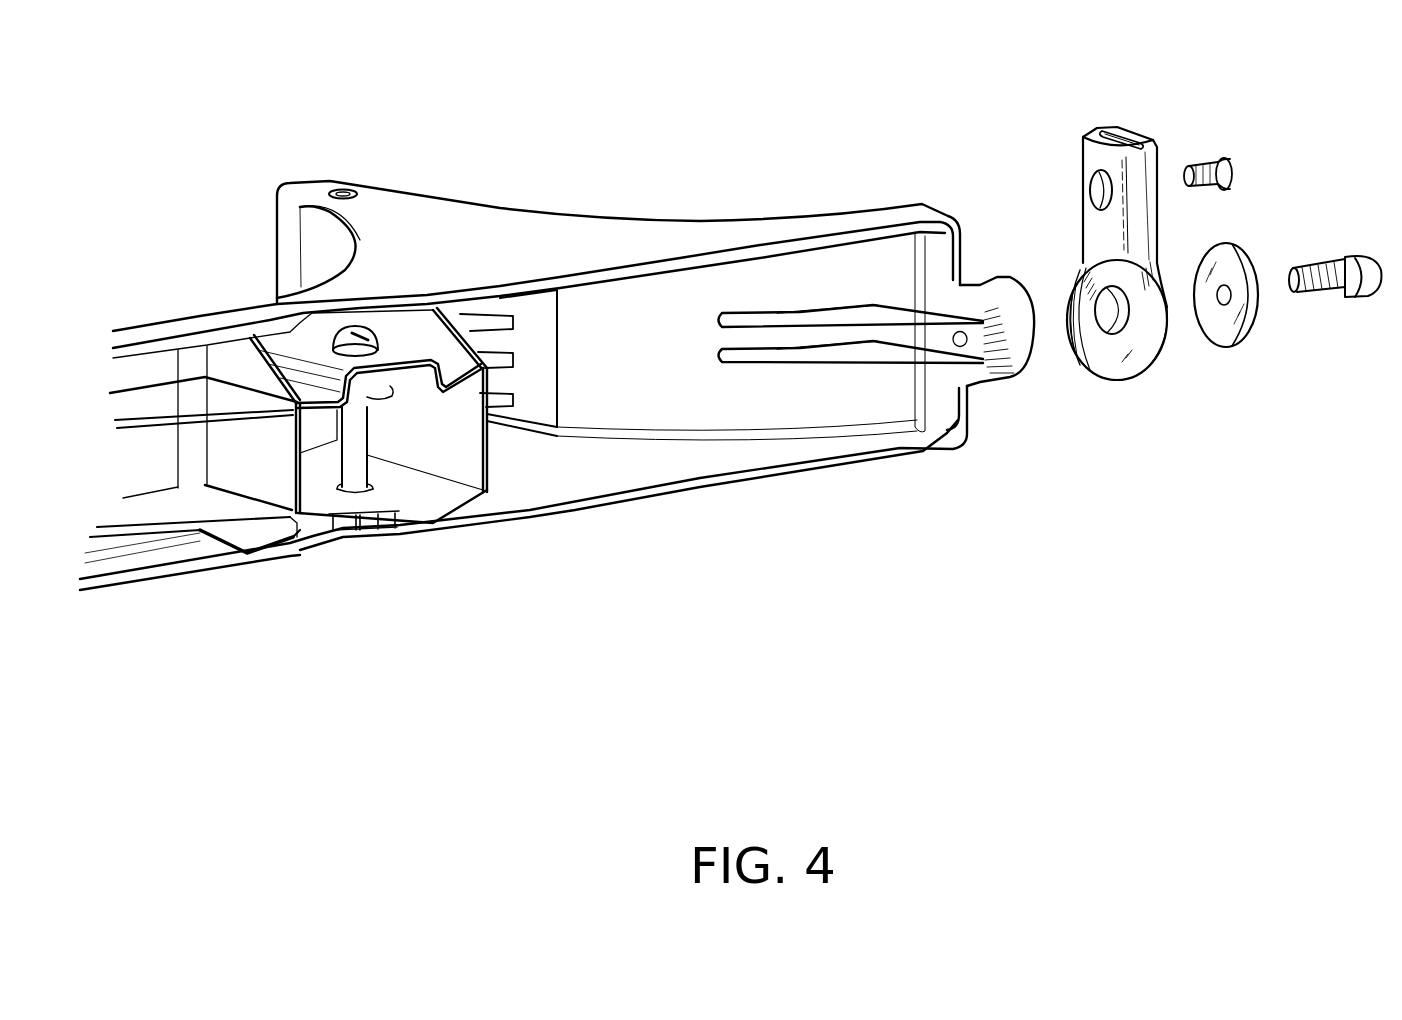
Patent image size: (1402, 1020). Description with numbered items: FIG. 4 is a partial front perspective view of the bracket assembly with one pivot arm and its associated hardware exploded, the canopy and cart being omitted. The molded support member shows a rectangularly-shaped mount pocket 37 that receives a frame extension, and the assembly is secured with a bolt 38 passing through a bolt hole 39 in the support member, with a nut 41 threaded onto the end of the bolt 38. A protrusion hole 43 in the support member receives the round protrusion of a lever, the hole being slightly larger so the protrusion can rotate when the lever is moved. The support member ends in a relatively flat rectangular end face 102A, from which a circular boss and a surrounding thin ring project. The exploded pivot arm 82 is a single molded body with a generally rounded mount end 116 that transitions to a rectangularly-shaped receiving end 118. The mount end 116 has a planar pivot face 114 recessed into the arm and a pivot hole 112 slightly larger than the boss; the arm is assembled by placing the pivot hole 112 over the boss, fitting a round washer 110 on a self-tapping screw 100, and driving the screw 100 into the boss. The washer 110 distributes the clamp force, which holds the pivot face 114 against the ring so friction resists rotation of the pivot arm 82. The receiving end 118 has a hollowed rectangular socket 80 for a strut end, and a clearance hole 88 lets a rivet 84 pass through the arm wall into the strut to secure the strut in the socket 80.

The mount pocket 37 is at (457, 440).
The bolt 38 is at (352, 472).
The bolt hole 39 is at (362, 345).
The nut 41 is at (368, 522).
The protrusion hole 43 is at (346, 188).
The end face 102A is at (977, 243).
The receiving end 118 is at (1083, 153).
The socket 80 is at (1113, 128).
The pivot arm 82 is at (1143, 177).
The rivet 84 is at (1230, 167).
The clearance hole 88 is at (1092, 192).
The washer 110 is at (1237, 245).
The self-tapping screw 100 is at (1320, 258).
The mount end 116 is at (1147, 350).
The pivot hole 112 is at (1117, 313).
The pivot face 114 is at (1110, 350).